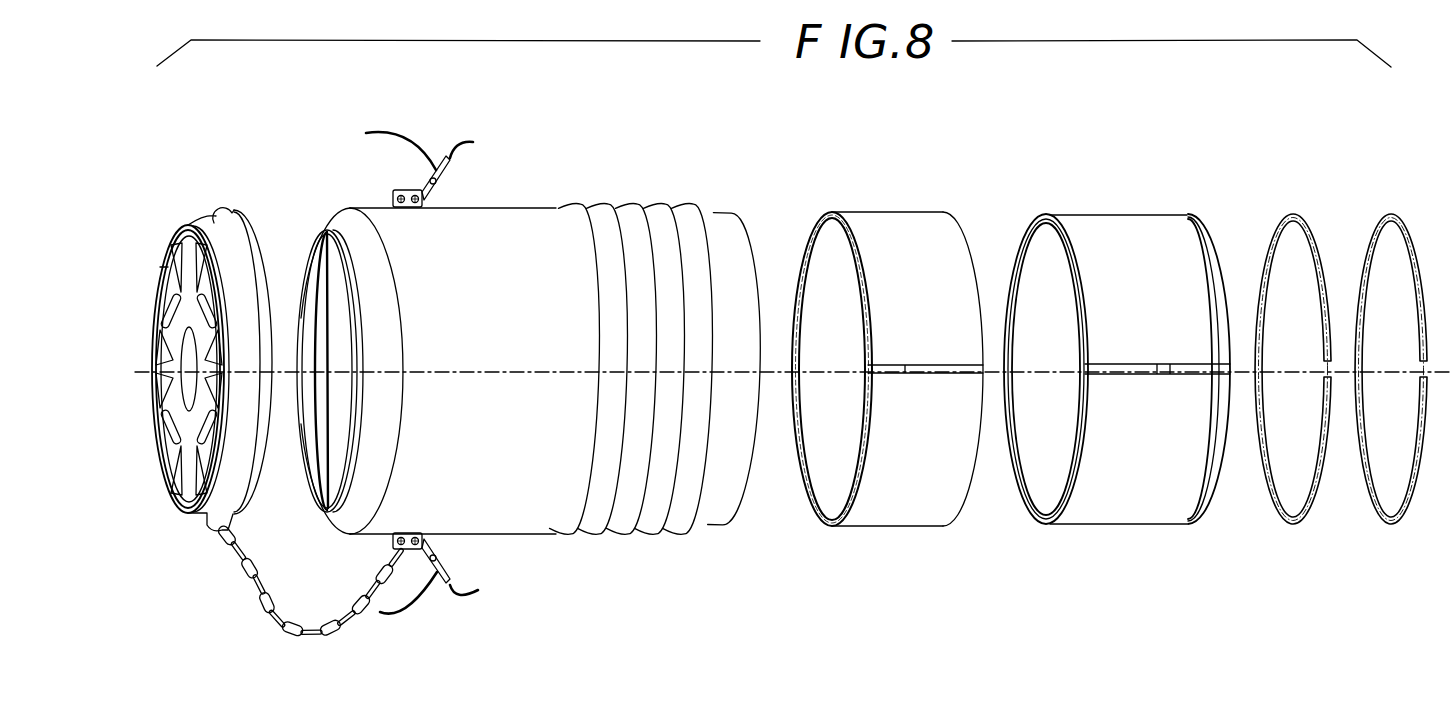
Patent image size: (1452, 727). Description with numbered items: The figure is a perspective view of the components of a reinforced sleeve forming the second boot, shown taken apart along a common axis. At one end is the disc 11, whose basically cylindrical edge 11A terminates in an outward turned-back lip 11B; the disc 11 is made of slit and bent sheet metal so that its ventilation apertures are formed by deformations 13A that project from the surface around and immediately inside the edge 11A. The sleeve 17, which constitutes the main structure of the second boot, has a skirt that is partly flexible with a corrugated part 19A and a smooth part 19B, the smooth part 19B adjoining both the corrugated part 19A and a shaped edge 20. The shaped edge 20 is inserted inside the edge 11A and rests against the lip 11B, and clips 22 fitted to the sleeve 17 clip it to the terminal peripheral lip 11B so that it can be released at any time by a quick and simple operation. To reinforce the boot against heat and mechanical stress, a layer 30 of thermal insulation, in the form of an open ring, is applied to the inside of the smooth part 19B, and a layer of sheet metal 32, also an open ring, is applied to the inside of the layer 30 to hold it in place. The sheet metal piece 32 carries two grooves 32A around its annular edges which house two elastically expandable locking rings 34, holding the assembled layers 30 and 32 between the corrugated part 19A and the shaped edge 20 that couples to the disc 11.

The disc 11 is at (278, 369).
The cylindrical edge 11A is at (223, 240).
The outward turned-back lip 11B is at (252, 223).
The deformations 13A is at (173, 250).
The sleeve 17 is at (532, 379).
The corrugated part 19A is at (637, 537).
The smooth part 19B is at (525, 518).
The shaped edge 20 is at (310, 232).
The clips 22 is at (440, 165).
The layer of thermal insulation 30 is at (907, 526).
The layer of sheet metal 32 is at (1117, 418).
The grooves 32A is at (1213, 447).
The locking rings 34 is at (1388, 513).